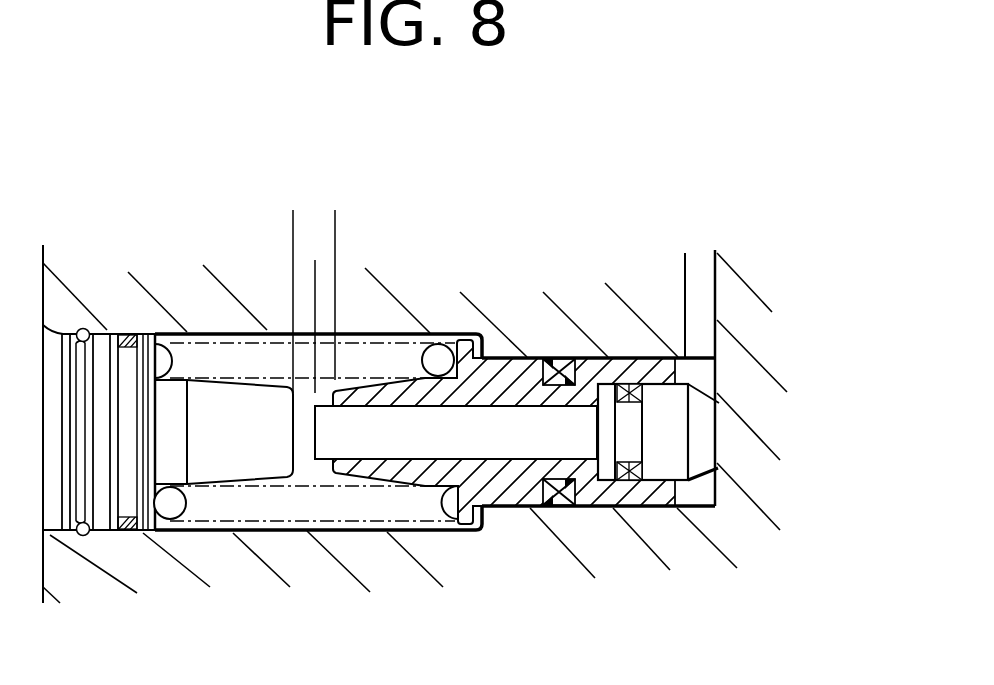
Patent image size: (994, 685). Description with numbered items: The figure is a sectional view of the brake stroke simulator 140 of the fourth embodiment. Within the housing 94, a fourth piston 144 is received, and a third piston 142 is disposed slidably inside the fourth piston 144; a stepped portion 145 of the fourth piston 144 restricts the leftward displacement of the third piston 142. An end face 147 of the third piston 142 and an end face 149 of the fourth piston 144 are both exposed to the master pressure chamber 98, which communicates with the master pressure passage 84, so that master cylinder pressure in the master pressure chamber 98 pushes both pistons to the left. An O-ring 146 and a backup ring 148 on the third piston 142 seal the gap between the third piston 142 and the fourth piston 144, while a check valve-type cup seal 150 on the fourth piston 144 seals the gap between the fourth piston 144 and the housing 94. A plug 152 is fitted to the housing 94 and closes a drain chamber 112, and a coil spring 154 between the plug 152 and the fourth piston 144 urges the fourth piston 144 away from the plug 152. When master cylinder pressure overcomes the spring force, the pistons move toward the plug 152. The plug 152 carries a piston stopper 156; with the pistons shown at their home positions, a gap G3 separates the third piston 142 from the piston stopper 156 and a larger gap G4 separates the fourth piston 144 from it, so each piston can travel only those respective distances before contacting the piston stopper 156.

The master pressure passage 84 is at (700, 317).
The housing 94 is at (573, 345).
The master pressure chamber 98 is at (715, 504).
The drain chamber 112 is at (303, 462).
The brake stroke simulator 140 is at (437, 315).
The third piston 142 is at (693, 450).
The fourth piston 144 is at (607, 506).
The stepped portion 145 is at (593, 506).
The O-ring 146 is at (647, 506).
The end face 147 is at (693, 423).
The backup ring 148 is at (622, 360).
The end face 149 is at (700, 373).
The check valve-type cup seal 150 is at (467, 532).
The plug 152 is at (203, 460).
The coil spring 154 is at (420, 497).
The piston stopper 156 is at (243, 407).
The gap G3 is at (330, 273).
The gap G4 is at (263, 243).